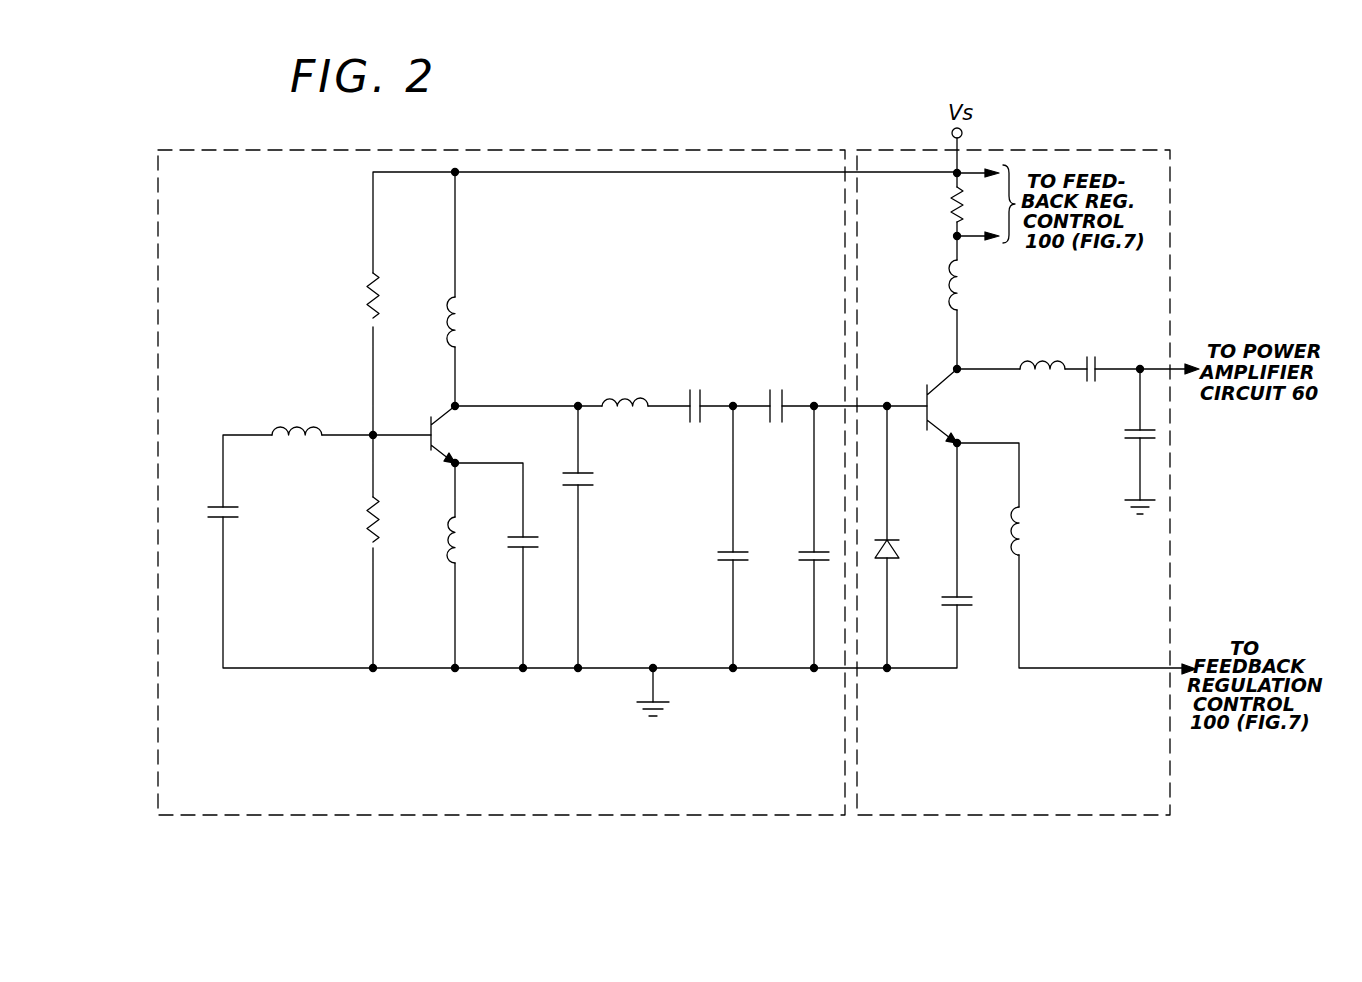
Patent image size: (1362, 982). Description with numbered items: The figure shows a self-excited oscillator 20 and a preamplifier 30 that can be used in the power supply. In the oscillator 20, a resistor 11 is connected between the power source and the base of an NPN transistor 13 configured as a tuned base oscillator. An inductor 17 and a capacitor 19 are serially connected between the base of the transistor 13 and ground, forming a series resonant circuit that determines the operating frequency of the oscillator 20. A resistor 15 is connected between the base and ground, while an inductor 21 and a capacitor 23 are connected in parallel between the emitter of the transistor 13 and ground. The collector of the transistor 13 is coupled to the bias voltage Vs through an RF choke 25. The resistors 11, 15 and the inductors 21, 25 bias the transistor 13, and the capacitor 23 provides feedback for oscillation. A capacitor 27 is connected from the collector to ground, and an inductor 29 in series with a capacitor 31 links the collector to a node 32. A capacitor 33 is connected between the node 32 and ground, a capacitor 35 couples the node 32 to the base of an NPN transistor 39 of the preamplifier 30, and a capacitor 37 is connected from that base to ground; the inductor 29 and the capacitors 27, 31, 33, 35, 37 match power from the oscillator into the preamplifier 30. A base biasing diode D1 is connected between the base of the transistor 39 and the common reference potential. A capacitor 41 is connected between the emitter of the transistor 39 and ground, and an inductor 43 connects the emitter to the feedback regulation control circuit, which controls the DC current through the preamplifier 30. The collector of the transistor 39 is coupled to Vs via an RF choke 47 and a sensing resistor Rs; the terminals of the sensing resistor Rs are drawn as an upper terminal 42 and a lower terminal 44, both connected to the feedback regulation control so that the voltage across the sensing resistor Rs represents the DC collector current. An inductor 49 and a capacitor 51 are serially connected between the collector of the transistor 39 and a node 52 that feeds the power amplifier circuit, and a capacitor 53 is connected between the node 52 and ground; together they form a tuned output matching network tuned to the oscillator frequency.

The self-excited oscillator 20 is at (783, 150).
The preamplifier 30 is at (1140, 148).
The resistor 11 is at (373, 277).
The NPN transistor 13 is at (443, 450).
The resistor 15 is at (370, 507).
The inductor 17 is at (294, 430).
The capacitor 19 is at (232, 517).
The inductor 21 is at (465, 527).
The capacitor 23 is at (528, 548).
The RF choke 25 is at (465, 306).
The capacitor 27 is at (585, 485).
The inductor 29 is at (644, 403).
The capacitor 31 is at (688, 412).
The node 32 is at (733, 404).
The capacitor 33 is at (733, 562).
The capacitor 35 is at (780, 395).
The capacitor 37 is at (812, 562).
The NPN transistor 39 is at (935, 422).
The capacitor 41 is at (948, 605).
The supply node 42 is at (960, 171).
The inductor 43 is at (1028, 528).
The sense node 44 is at (952, 238).
The RF choke 47 is at (967, 283).
The inductor 49 is at (1053, 360).
The capacitor 51 is at (1097, 365).
The node 52 is at (1138, 375).
The capacitor 53 is at (1135, 442).
The base biasing diode D1 is at (898, 545).
The sensing resistor Rs is at (944, 204).